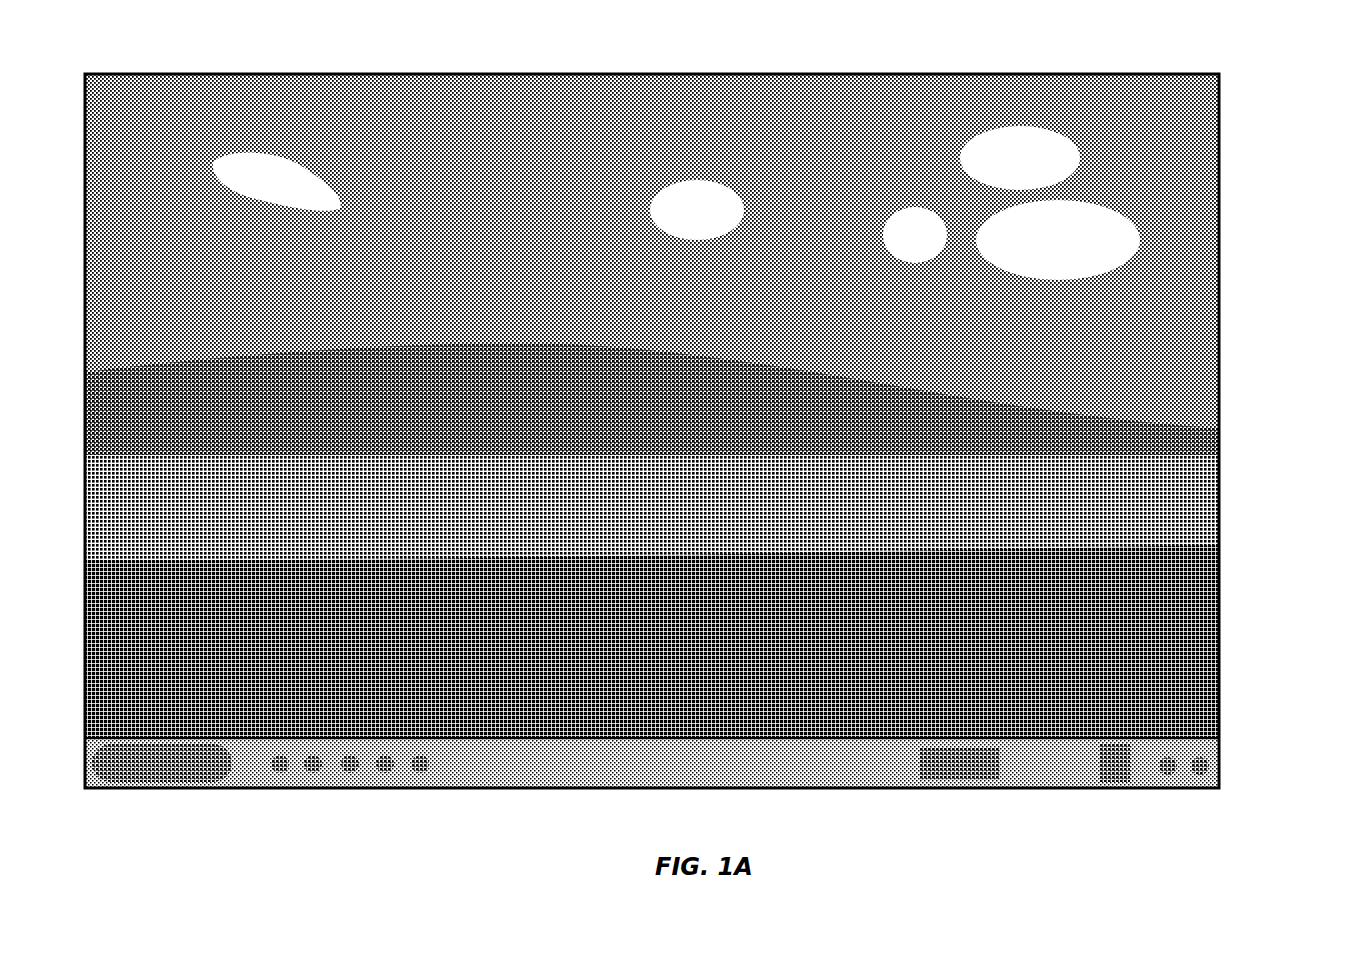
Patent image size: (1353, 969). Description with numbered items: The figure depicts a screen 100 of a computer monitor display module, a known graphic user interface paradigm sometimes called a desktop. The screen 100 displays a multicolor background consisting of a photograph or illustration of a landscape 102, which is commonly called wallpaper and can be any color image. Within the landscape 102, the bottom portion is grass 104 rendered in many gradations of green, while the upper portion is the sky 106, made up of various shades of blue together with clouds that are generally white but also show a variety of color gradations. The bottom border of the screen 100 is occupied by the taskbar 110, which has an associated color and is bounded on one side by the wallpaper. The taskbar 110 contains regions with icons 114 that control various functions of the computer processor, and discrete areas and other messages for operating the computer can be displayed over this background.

The screen 100 is at (707, 435).
The landscape 102 is at (697, 448).
The grass 104 is at (1221, 606).
The sky 106 is at (1155, 246).
The taskbar 110 is at (652, 780).
The icons 114 is at (310, 788).